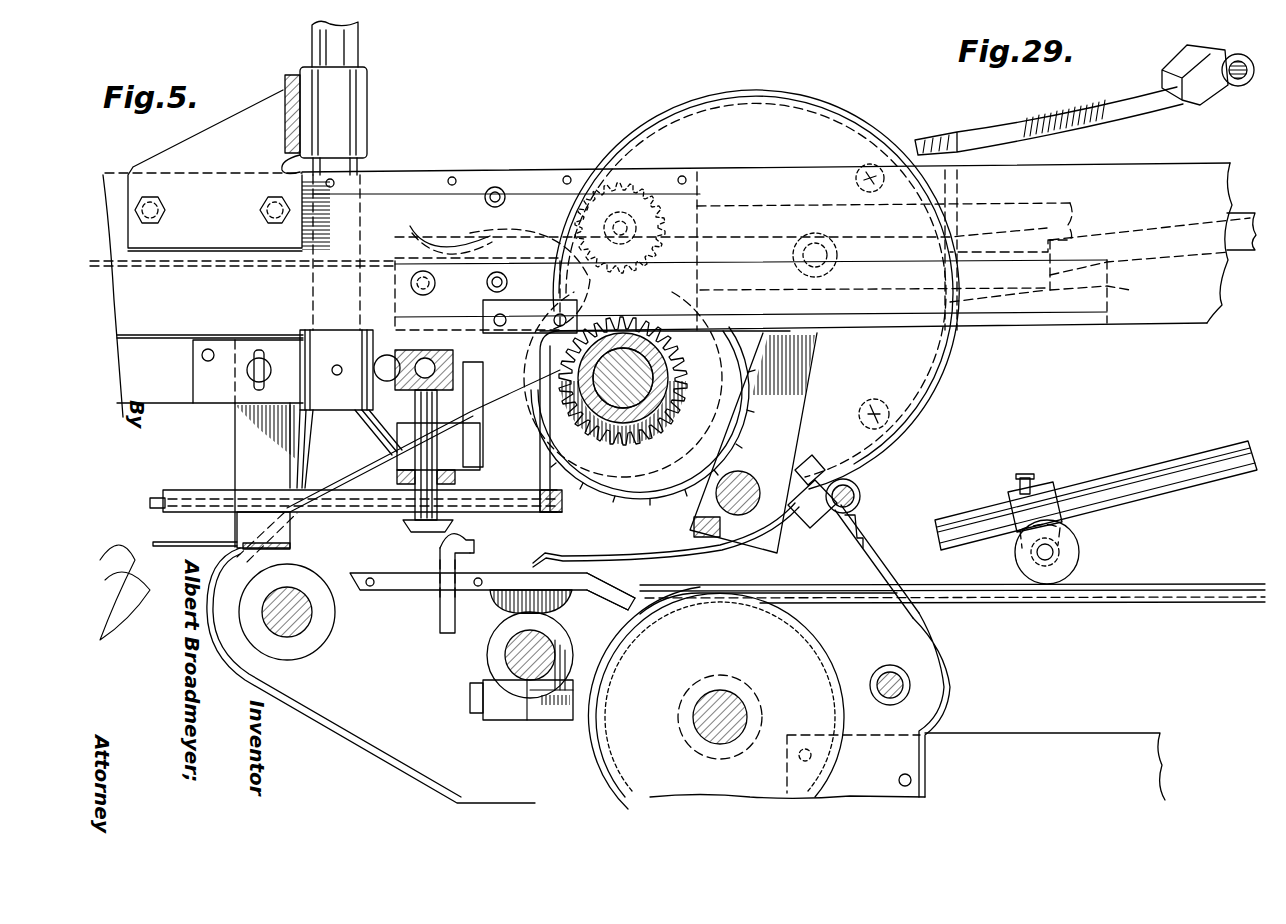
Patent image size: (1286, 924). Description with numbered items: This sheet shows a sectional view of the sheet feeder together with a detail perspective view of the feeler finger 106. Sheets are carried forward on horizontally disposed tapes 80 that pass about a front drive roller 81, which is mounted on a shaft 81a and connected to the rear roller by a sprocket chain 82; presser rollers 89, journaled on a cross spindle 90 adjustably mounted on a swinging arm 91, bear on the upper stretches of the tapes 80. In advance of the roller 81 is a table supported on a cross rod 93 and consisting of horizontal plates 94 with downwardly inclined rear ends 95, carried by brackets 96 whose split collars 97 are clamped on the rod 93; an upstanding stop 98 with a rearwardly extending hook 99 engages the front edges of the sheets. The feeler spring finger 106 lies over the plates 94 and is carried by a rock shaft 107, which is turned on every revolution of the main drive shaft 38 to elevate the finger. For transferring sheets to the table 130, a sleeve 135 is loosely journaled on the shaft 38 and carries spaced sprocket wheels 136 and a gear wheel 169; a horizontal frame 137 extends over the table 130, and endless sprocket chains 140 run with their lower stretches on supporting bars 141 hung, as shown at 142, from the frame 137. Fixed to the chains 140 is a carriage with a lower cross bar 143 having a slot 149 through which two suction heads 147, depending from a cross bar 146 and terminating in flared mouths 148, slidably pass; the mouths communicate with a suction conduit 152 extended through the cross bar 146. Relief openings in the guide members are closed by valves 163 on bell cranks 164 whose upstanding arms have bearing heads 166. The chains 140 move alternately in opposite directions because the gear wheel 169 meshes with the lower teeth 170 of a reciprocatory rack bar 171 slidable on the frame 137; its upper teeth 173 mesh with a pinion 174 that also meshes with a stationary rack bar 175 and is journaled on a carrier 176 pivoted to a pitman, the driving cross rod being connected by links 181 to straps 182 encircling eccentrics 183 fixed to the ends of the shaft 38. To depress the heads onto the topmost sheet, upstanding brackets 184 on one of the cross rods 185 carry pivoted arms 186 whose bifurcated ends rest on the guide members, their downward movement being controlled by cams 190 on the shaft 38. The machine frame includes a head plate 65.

In FIG. 5, the horizontal frame 137 is at (414, 180).
In FIG. 5, the bearing heads 166 is at (495, 187).
In FIG. 5, the stationary rack bar 175 is at (548, 265).
In FIG. 5, the pinion 174 is at (640, 205).
In FIG. 5, the eccentrics 183 is at (765, 127).
In FIG. 5, the straps 182 is at (847, 120).
In FIG. 5, the carrier 176 is at (1038, 205).
In FIG. 5, the upper set of teeth 173 is at (1090, 258).
In FIG. 5, the reciprocatory rack bar 171 is at (1120, 288).
In FIG. 5, the links 181 is at (1236, 252).
In FIG. 5, the lower teeth 170 is at (1090, 330).
In FIG. 5, the gear wheel 169 is at (668, 323).
In FIG. 5, the bell cranks 164 is at (451, 228).
In FIG. 5, the arms 186 is at (533, 232).
In FIG. 5, the valves 163 is at (400, 282).
In FIG. 5, the endless sprocket chains 140 is at (118, 280).
In FIG. 5, the main drive shaft 38 is at (580, 417).
In FIG. 5, the sleeve 135 is at (585, 418).
In FIG. 5, the sprocket wheels 136 is at (720, 395).
In FIG. 5, the hanger 142 is at (550, 462).
In FIG. 5, the cams 190 is at (740, 418).
In FIG. 5, the upstanding brackets 184 is at (805, 358).
In FIG. 5, the cross rods 185 is at (745, 472).
In FIG. 5, the feeler spring finger 106 is at (675, 558).
In FIG. 29, the feeler spring finger 106 is at (1018, 128).
In FIG. 5, the rock shaft 107 is at (860, 505).
In FIG. 5, the suction conduit 152 is at (360, 440).
In FIG. 5, the cross bar 146 is at (438, 361).
In FIG. 5, the suction heads 147 is at (412, 522).
In FIG. 5, the open flared mouths 148 is at (416, 531).
In FIG. 5, the slot 149 is at (482, 461).
In FIG. 5, the lower cross bar 143 is at (397, 452).
In FIG. 5, the supporting bars 141 is at (338, 512).
In FIG. 5, the table 130 is at (220, 530).
In FIG. 5, the head plate 65 is at (348, 727).
In FIG. 5, the upstanding stop 98 is at (440, 561).
In FIG. 5, the hook or beak 99 is at (458, 553).
In FIG. 5, the horizontal plates 94 is at (514, 580).
In FIG. 5, the downwardly inclined rear ends 95 is at (622, 590).
In FIG. 5, the brackets 96 is at (562, 603).
In FIG. 5, the cross rod 93 is at (510, 653).
In FIG. 5, the split collars 97 is at (547, 718).
In FIG. 5, the tapes 80 is at (852, 593).
In FIG. 5, the front roller 81 is at (826, 650).
In FIG. 5, the shaft 81a is at (712, 713).
In FIG. 5, the sprocket chain 82 is at (1037, 605).
In FIG. 5, the swinging arm 91 is at (1146, 468).
In FIG. 5, the presser rollers 89 is at (1020, 556).
In FIG. 5, the cross spindle 90 is at (1055, 552).